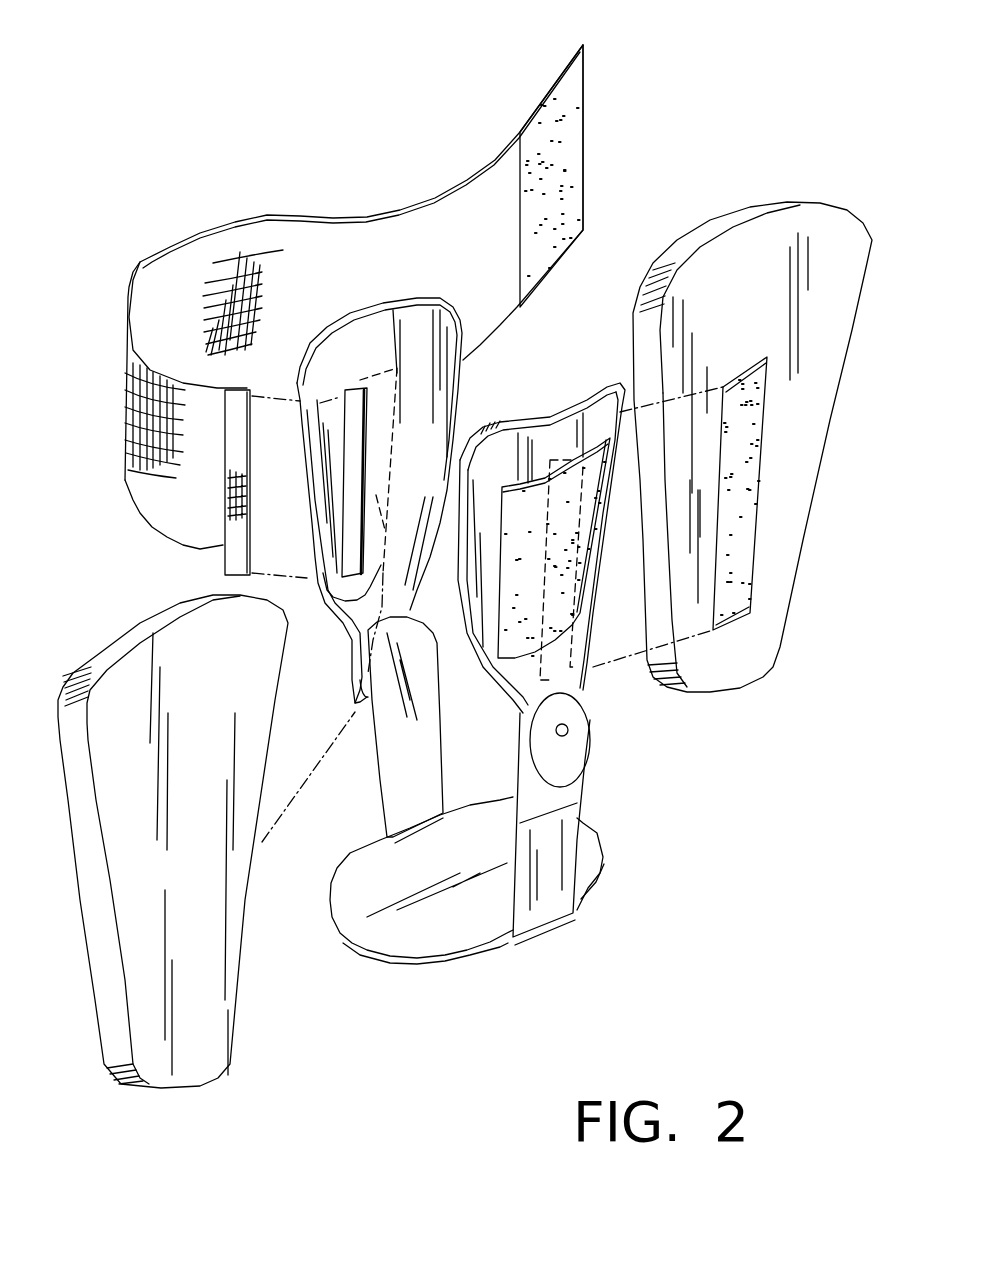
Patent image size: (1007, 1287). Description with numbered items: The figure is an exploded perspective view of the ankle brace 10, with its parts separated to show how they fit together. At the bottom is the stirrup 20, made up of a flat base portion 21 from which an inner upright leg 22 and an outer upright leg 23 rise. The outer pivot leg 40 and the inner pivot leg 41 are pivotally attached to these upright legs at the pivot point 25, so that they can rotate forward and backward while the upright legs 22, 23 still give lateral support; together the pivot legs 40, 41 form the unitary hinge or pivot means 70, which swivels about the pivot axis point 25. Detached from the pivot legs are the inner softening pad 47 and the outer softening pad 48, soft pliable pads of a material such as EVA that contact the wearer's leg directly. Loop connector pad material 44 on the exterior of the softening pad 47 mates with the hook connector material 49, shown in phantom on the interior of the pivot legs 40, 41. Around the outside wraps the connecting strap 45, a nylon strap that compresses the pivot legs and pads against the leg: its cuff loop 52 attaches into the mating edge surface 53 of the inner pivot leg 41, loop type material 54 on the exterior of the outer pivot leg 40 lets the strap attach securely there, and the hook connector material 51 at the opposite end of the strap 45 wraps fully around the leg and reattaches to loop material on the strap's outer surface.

The ankle brace 10 is at (125, 150).
The stirrup 20 is at (626, 876).
The flat base portion 21 is at (464, 937).
The inner upright leg 22 is at (397, 810).
The outer upright leg 23 is at (570, 788).
The pivot point 25 is at (568, 731).
The outer pivot leg 40 is at (613, 387).
The inner pivot leg 41 is at (452, 373).
The loop connector pad material 44 is at (750, 465).
The connecting strap 45 is at (440, 217).
The inner softening pad 47 is at (832, 217).
The outer softening pad 48 is at (125, 636).
The hook connector material 49 is at (368, 579).
The hook connector material 51 is at (573, 152).
The cuff loop 52 is at (237, 546).
The mating edge surface 53 is at (348, 390).
The loop type material 54 is at (533, 490).
The unitary hinge or pivot means 70 is at (327, 697).